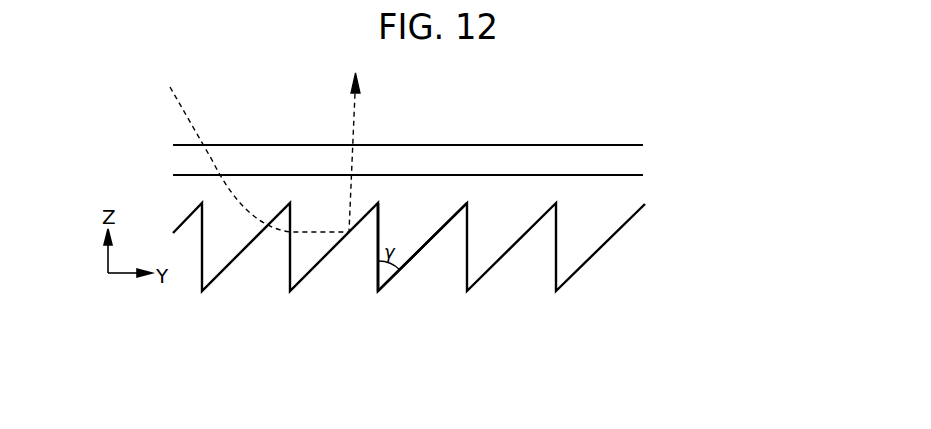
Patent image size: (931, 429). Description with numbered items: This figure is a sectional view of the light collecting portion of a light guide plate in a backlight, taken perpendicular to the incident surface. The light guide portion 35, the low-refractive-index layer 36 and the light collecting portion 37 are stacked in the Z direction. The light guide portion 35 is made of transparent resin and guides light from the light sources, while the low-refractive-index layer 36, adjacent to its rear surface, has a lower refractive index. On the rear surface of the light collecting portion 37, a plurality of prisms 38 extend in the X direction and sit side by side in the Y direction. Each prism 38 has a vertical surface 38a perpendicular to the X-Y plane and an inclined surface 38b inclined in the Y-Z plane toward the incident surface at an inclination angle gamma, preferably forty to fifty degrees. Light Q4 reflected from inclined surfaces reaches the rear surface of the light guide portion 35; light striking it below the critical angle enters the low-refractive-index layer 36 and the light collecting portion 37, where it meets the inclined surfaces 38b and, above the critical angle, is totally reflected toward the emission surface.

The light guide portion 35 is at (635, 138).
The low-refractive-index layer 36 is at (635, 165).
The light collecting portion 37 is at (615, 218).
The prism 38 is at (407, 248).
The vertical surface 38a is at (378, 262).
The inclined surface 38b is at (438, 233).
The light Q4 is at (258, 146).